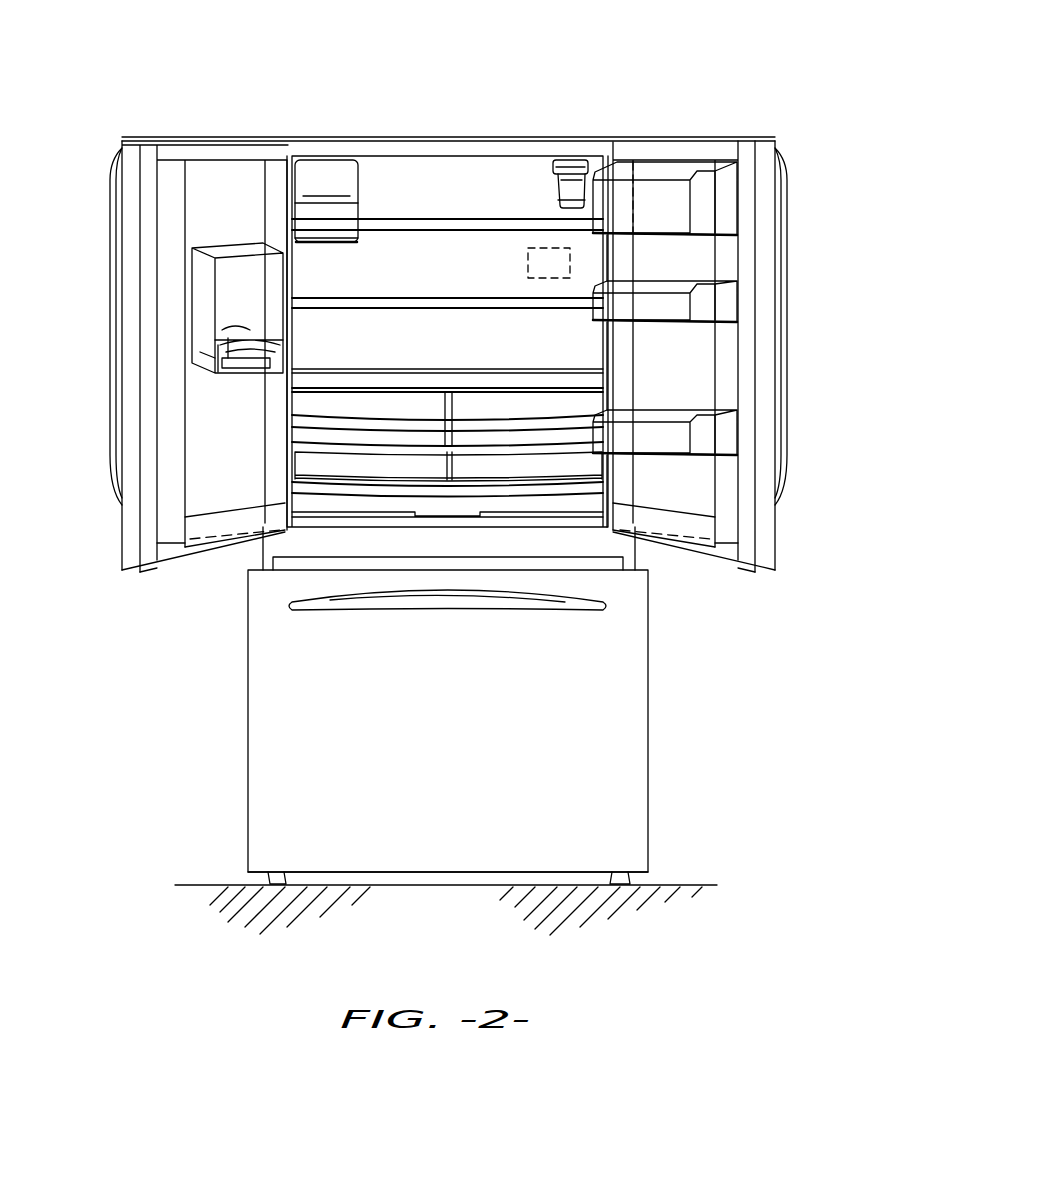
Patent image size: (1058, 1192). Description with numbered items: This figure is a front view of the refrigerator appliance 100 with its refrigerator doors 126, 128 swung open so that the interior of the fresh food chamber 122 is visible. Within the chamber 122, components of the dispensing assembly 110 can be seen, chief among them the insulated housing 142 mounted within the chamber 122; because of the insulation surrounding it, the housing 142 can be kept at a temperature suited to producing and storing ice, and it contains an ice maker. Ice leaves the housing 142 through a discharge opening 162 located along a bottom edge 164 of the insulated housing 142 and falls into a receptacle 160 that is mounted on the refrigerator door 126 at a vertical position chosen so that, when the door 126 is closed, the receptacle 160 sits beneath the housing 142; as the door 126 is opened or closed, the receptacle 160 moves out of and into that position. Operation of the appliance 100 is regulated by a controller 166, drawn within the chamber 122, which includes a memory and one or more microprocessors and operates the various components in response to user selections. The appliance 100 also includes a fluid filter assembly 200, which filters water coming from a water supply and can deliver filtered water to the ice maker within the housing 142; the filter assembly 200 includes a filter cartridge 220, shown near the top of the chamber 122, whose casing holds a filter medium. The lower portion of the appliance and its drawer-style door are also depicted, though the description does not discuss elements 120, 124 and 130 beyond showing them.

The refrigerator appliance 100 is at (668, 80).
The dispensing assembly 110 is at (282, 204).
The freezer chamber 120 is at (247, 792).
The fresh food chamber 122 is at (431, 186).
The freezer door handle 124 is at (612, 673).
The refrigerator door 126 is at (168, 140).
The refrigerator door 128 is at (685, 135).
The freezer door 130 is at (613, 767).
The insulated housing 142 is at (327, 178).
The receptacle 160 is at (237, 273).
The discharge opening 162 is at (333, 244).
The bottom edge 164 is at (323, 248).
The controller 166 is at (527, 265).
The fluid filter assembly 200 is at (549, 186).
The filter cartridge 220 is at (565, 157).